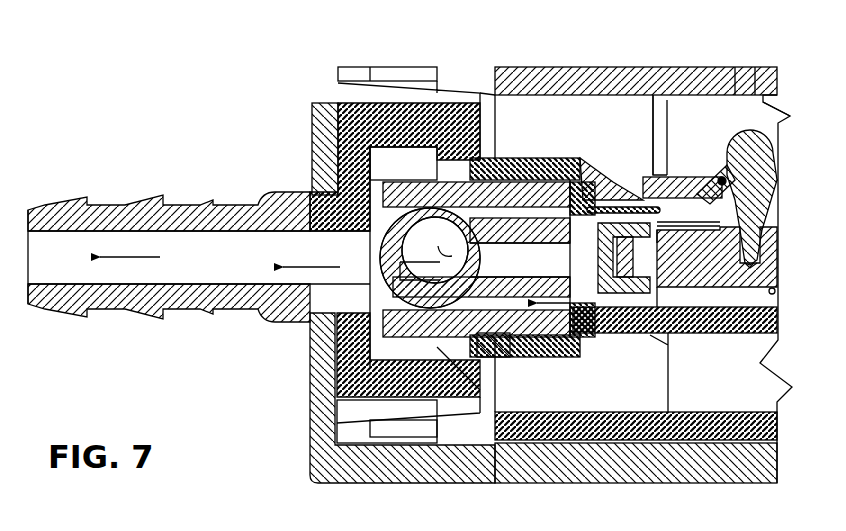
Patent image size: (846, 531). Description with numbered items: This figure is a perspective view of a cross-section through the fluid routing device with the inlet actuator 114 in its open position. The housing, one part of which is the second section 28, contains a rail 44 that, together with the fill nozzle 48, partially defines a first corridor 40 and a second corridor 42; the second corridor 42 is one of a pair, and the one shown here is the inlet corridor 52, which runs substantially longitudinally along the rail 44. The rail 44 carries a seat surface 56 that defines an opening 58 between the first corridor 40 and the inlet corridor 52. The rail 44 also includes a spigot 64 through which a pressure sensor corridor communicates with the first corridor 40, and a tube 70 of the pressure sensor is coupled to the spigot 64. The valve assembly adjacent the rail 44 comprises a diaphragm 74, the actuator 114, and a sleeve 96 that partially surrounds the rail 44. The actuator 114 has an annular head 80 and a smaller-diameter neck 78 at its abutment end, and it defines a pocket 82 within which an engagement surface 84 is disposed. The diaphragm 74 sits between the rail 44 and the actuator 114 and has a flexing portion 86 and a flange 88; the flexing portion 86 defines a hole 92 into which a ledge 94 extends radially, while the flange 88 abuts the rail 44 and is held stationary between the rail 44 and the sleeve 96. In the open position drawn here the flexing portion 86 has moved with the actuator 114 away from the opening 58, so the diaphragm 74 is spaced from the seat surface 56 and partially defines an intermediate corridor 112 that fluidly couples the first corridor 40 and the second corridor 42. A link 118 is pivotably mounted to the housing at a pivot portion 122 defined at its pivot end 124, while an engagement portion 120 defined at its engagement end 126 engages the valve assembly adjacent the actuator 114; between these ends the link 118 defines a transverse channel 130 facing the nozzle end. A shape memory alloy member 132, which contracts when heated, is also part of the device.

The second section 28 is at (510, 465).
The first corridor 40 is at (85, 278).
The second corridor 42 is at (497, 258).
The rail 44 is at (403, 188).
The fill nozzle 48 is at (87, 205).
The inlet corridor 52 is at (378, 370).
The seat surface 56 is at (565, 335).
The opening 58 is at (540, 247).
The spigot 64 is at (567, 112).
The tube 70 is at (625, 88).
The diaphragm 74 is at (650, 200).
The neck 78 is at (657, 245).
The head 80 is at (630, 295).
The pocket 82 is at (762, 240).
The engagement surface 84 is at (772, 255).
The flexing portion 86 is at (665, 200).
The flange 88 is at (588, 118).
The hole 92 is at (600, 293).
The ledge 94 is at (660, 300).
The sleeve 96 is at (493, 97).
The intermediate corridor 112 is at (630, 213).
The actuator 114 is at (770, 252).
The link 118 is at (750, 135).
The engagement portion 120 is at (752, 228).
The pivot portion 122 is at (763, 150).
The pivot end 124 is at (790, 108).
The engagement end 126 is at (780, 325).
The channel 130 is at (723, 172).
The shape memory alloy member 132 is at (720, 180).